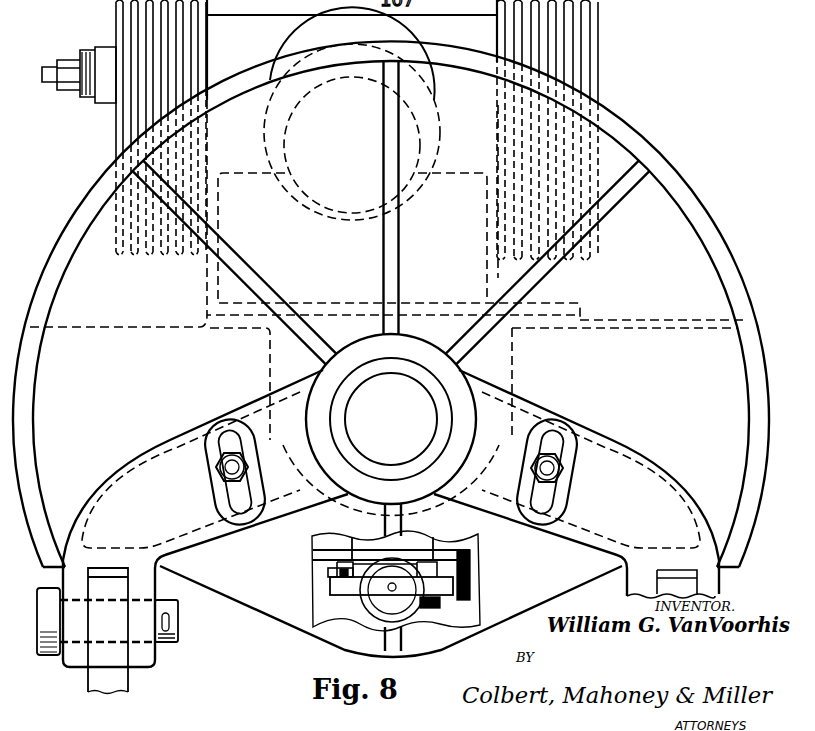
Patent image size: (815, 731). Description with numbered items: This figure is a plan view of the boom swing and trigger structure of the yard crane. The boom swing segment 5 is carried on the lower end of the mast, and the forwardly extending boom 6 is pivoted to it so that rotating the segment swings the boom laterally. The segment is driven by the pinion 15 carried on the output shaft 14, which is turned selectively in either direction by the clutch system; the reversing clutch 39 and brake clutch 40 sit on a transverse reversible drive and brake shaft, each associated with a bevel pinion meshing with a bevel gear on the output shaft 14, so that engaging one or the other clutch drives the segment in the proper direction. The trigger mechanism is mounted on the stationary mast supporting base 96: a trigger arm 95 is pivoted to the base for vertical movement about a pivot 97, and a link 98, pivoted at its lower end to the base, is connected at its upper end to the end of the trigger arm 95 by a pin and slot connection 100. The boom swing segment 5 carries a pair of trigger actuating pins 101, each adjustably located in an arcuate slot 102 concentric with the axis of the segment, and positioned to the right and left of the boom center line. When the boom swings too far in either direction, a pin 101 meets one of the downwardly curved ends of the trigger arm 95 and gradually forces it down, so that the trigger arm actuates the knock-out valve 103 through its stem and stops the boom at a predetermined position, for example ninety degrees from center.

The boom swing segment 5 is at (664, 277).
The boom 6 is at (113, 673).
The output shaft 14 is at (313, 36).
The pinion 15 is at (303, 105).
The reversing clutch 39 is at (116, 126).
The brake clutch 40 is at (598, 66).
The trigger arm 95 is at (452, 584).
The mast supporting base 96 is at (461, 543).
The pivot 97 is at (460, 597).
The link 98 is at (328, 572).
The pin and slot connection 100 is at (318, 551).
The trigger actuating pins 101 is at (215, 468).
The arcuate slot 102 is at (238, 500).
The knock-out valve 103 is at (410, 610).